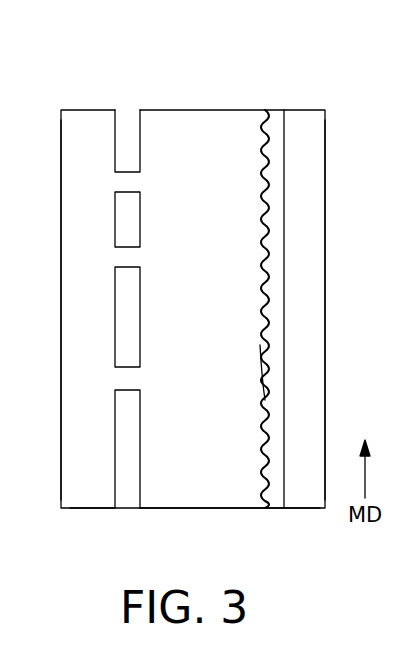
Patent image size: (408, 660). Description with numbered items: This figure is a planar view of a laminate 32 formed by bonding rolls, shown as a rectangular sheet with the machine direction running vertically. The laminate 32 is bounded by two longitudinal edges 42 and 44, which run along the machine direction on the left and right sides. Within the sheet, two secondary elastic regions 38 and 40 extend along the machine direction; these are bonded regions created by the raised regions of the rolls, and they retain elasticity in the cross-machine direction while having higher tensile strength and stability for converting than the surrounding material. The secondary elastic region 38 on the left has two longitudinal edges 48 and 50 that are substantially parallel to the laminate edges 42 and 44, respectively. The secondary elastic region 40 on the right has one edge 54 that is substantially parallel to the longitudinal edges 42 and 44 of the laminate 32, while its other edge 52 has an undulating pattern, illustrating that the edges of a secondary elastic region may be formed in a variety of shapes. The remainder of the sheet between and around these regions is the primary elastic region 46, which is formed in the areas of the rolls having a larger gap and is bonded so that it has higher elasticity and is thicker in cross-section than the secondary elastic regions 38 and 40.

The laminate 32 is at (206, 82).
The secondary elastic region 38 is at (128, 118).
The secondary elastic region 40 is at (272, 118).
The longitudinal edge 42 is at (61, 289).
The longitudinal edge 44 is at (325, 296).
The primary elastic region 46 is at (196, 510).
The longitudinal edge 48 is at (115, 311).
The longitudinal edge 50 is at (140, 232).
The edge 52 is at (262, 388).
The edge 54 is at (290, 393).